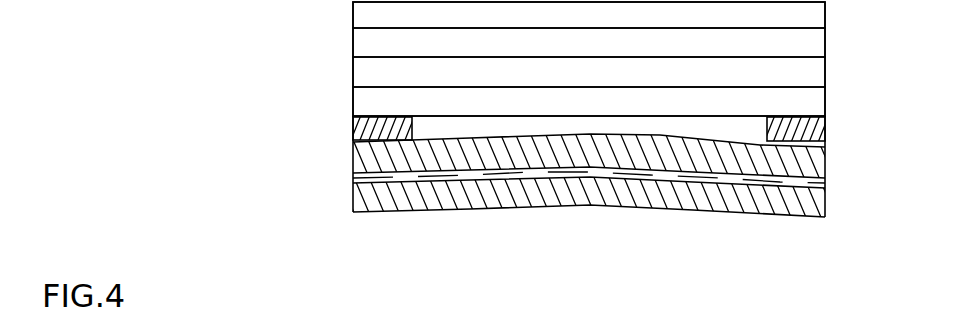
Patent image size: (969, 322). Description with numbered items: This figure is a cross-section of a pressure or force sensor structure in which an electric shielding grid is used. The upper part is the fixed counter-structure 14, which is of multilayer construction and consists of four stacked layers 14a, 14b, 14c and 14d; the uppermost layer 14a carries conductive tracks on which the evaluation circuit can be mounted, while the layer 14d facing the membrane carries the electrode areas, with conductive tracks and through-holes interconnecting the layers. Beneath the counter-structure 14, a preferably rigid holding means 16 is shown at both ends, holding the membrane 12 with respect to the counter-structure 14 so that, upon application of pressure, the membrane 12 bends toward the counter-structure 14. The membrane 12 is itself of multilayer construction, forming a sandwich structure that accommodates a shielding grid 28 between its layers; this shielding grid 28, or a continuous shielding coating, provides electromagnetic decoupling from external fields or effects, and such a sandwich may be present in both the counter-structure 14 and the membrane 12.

The membrane 12 is at (826, 200).
The counter-structure 14 is at (582, 58).
The uppermost layer 14a is at (353, 15).
The second layer 14b is at (353, 47).
The third layer 14c is at (353, 76).
The fourth layer 14d is at (353, 105).
The holding means 16 is at (353, 128).
The shielding grid 28 is at (423, 183).